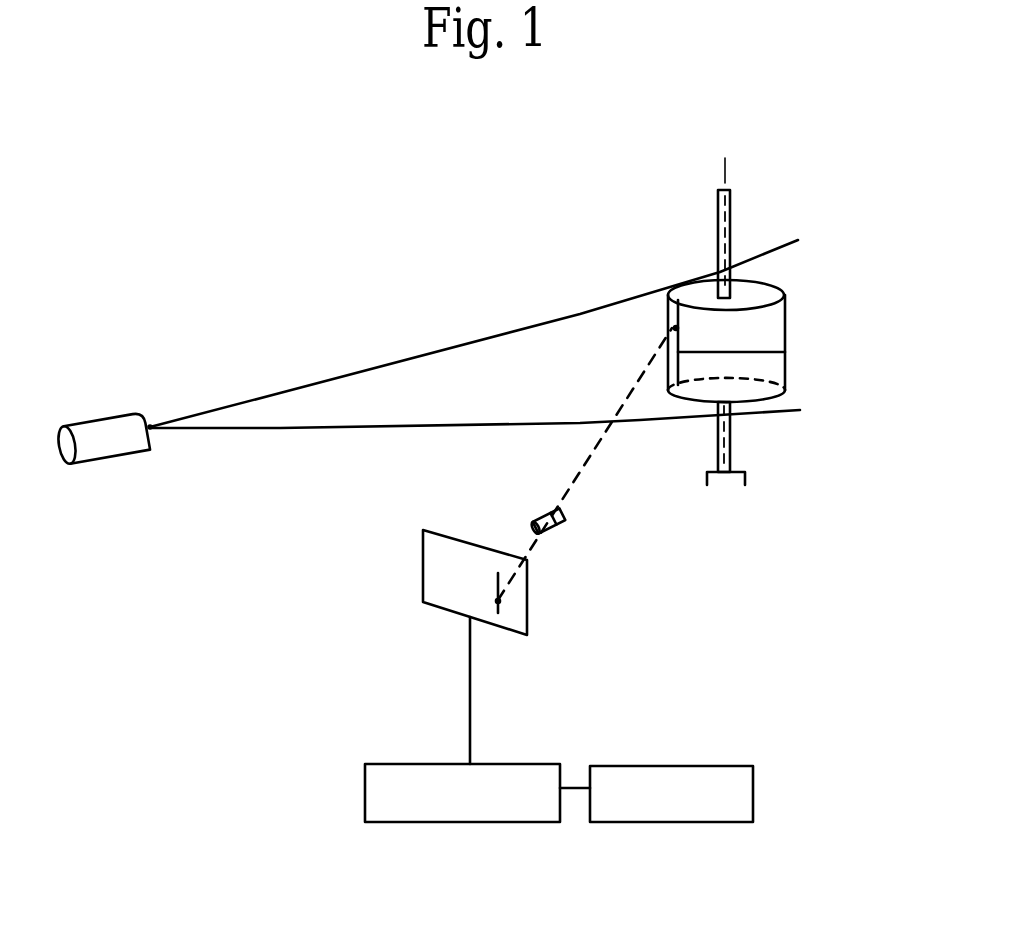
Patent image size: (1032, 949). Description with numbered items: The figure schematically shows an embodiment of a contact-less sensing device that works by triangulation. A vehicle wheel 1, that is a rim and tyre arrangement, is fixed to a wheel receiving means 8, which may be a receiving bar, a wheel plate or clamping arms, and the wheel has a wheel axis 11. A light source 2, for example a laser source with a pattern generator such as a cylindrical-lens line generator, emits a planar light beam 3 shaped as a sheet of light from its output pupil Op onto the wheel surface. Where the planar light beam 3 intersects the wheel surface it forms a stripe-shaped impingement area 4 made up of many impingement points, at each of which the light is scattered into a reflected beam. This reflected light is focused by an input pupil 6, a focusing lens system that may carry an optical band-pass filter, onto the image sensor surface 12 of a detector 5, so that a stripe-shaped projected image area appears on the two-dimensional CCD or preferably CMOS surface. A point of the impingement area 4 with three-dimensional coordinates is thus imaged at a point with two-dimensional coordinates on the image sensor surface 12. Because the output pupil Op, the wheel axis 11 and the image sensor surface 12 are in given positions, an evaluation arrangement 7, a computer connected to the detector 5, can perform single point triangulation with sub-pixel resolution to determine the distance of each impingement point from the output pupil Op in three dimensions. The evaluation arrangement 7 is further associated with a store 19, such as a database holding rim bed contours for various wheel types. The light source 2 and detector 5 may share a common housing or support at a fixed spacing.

The vehicle wheel 1 is at (777, 320).
The light source 2 is at (98, 432).
The planar light beam 3 is at (510, 355).
The stripe-shaped impingement area 4 is at (785, 352).
The detector 5 is at (612, 631).
The input pupil 6 is at (563, 520).
The evaluation arrangement 7 is at (479, 807).
The wheel receiving means 8 is at (730, 450).
The wheel axis 11 is at (728, 230).
The image sensor surface 12 is at (423, 575).
The store 19 is at (690, 807).
The output pupil Op is at (150, 427).